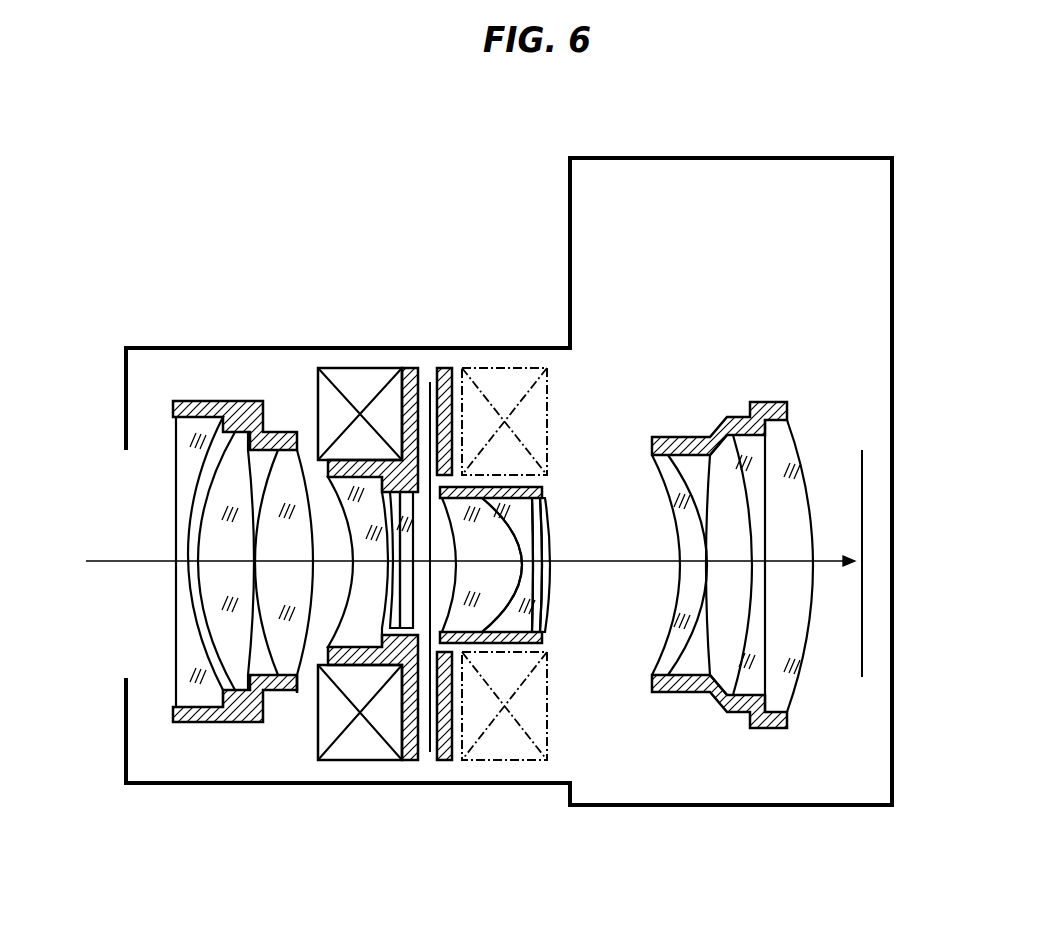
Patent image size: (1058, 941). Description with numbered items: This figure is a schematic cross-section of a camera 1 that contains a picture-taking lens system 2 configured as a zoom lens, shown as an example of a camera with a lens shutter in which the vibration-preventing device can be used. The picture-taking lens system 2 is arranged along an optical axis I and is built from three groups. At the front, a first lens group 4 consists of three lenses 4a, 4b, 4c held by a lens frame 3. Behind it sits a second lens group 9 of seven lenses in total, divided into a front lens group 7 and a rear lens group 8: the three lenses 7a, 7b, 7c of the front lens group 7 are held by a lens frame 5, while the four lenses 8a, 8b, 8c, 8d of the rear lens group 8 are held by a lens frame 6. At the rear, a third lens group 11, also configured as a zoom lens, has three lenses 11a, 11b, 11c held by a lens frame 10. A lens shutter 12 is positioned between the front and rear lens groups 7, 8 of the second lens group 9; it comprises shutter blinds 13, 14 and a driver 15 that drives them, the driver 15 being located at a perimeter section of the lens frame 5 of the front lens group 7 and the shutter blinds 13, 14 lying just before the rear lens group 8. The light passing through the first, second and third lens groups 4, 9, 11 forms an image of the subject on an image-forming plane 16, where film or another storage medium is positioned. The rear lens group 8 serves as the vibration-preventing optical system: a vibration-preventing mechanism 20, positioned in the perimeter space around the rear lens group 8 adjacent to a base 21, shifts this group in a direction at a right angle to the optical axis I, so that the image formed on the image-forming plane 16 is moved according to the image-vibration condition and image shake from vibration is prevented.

The camera 1 is at (786, 149).
The picture-taking lens system 2 is at (225, 372).
The lens frame 3 is at (173, 715).
The first lens group 4 is at (231, 661).
The lens 4a is at (200, 700).
The lens 4b is at (243, 677).
The lens 4c is at (287, 652).
The lens frame 5 is at (357, 700).
The lens frame 6 is at (467, 660).
The front lens group 7 is at (344, 418).
The lens 7a is at (380, 480).
The lens 7b is at (388, 490).
The lens 7c is at (402, 490).
The rear lens group 8 is at (553, 696).
The lens 8a is at (470, 640).
The lens 8b is at (520, 625).
The lens 8c is at (540, 597).
The lens 8d is at (553, 610).
The second lens group 9 is at (327, 493).
The lens frame 10 is at (715, 428).
The third lens group 11 is at (758, 662).
The lens 11a is at (652, 660).
The lens 11b is at (737, 680).
The lens 11c is at (790, 680).
The lens shutter 12 is at (395, 656).
The shutter blind 13 is at (463, 368).
The shutter blind 14 is at (428, 752).
The driver 15 is at (300, 657).
The image-forming plane 16 is at (862, 537).
The vibration-preventing mechanism 20 is at (510, 383).
The base 21 is at (443, 365).
The optical axis I is at (120, 561).